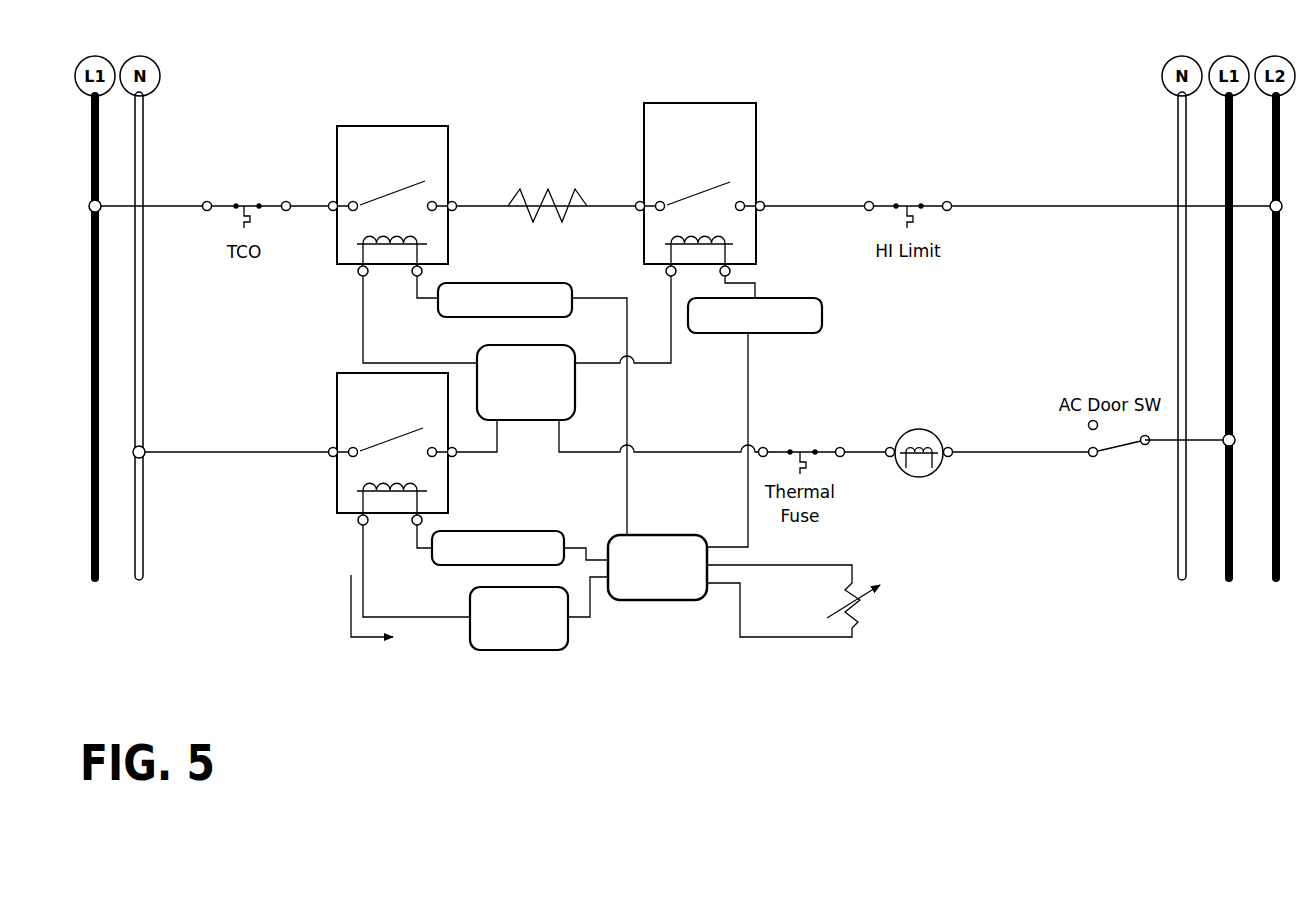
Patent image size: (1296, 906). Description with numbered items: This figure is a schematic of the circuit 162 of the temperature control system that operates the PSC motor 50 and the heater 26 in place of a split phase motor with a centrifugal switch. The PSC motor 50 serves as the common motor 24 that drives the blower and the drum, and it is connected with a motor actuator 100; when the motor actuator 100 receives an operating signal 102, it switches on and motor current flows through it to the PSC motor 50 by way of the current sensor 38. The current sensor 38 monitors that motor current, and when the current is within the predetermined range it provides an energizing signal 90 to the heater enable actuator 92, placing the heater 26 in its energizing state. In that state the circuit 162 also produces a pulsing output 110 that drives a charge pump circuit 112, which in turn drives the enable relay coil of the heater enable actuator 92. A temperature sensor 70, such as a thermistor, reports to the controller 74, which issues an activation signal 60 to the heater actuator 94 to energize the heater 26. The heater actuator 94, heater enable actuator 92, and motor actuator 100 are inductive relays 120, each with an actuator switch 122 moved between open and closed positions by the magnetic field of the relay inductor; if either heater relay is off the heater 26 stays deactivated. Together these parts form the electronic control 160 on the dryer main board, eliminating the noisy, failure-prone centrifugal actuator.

The common motor 24 is at (968, 448).
The heater 26 is at (540, 190).
The current sensor 38 is at (522, 420).
The PSC motor 50 is at (937, 468).
The activation signal 60 is at (407, 277).
The temperature sensor 70 is at (793, 648).
The controller 74 is at (664, 589).
The energizing signal 90 is at (745, 275).
The heater enable actuator 92 is at (708, 91).
The heater actuator 94 is at (378, 124).
The motor actuator 100 is at (339, 476).
The operating signal 102 is at (404, 531).
The pulsing output 110 is at (351, 607).
The charge pump circuit 112 is at (462, 645).
The inductive relay 120 is at (357, 496).
The actuator switch 122 is at (378, 442).
The electronic control 160 is at (652, 530).
The circuit 162 is at (858, 103).